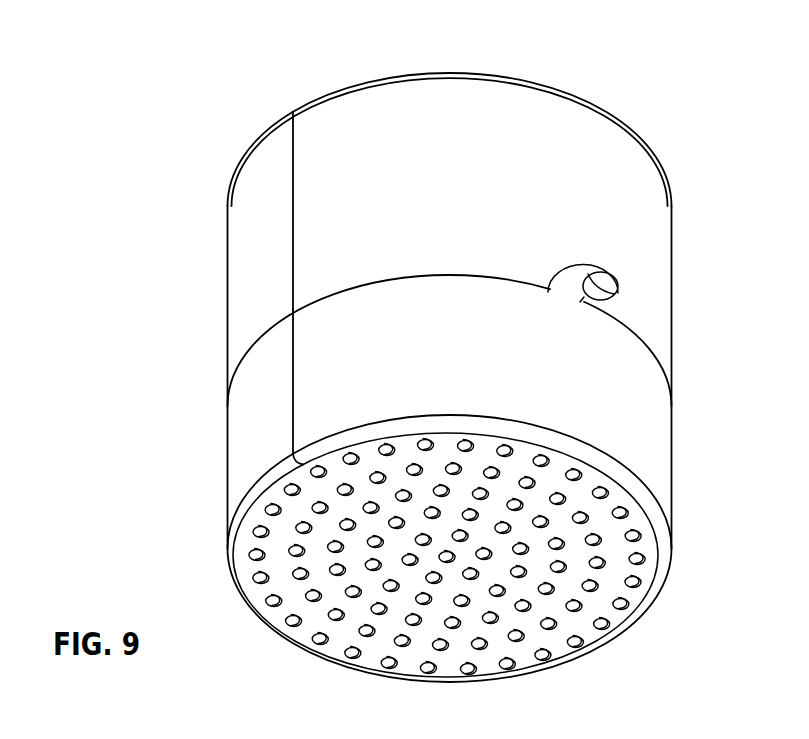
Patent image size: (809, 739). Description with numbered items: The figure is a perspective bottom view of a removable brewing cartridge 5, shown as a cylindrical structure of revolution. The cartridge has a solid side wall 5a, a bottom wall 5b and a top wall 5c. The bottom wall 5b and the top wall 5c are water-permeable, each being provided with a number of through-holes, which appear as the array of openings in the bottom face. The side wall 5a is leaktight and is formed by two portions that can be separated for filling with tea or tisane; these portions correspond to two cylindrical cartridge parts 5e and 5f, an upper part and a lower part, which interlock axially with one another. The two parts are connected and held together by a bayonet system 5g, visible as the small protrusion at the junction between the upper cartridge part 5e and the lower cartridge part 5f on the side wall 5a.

The brewing cartridge 5 is at (703, 400).
The side wall 5a is at (648, 253).
The bottom wall 5b is at (552, 638).
The top wall 5c is at (588, 98).
The cylindrical cartridge part 5e is at (678, 192).
The cylindrical cartridge part 5f is at (676, 578).
The bayonet system 5g is at (617, 296).